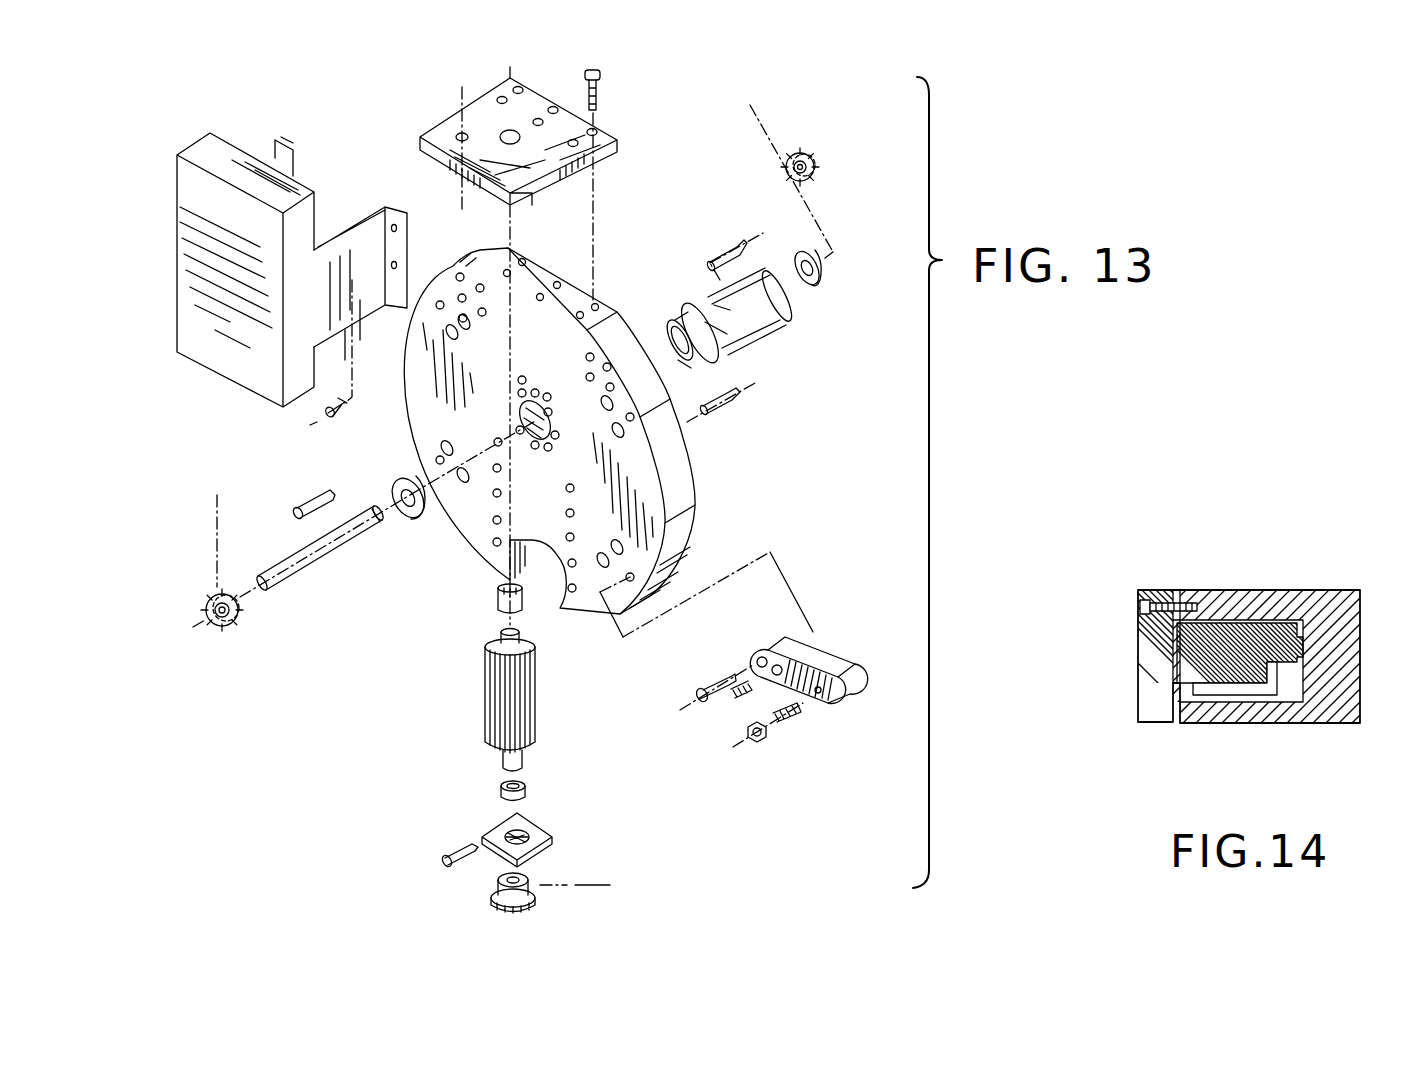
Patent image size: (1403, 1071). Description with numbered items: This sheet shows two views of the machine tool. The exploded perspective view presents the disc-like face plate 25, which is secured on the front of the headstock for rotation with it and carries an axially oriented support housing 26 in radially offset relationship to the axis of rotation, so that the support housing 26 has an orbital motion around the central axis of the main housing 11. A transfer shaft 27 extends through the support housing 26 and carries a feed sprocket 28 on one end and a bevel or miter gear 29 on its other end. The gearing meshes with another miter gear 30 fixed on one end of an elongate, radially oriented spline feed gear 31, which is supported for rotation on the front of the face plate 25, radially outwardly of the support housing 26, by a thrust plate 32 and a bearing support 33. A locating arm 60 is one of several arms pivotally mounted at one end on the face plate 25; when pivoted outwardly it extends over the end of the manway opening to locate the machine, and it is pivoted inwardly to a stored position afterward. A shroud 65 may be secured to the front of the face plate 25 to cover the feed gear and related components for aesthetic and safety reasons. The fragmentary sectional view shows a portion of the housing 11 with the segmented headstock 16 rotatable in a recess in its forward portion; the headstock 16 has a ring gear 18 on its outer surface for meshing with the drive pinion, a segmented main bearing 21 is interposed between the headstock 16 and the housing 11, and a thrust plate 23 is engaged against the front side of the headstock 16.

In FIG. 13, the shroud 65 is at (192, 212).
In FIG. 13, the thrust plate 32 is at (443, 127).
In FIG. 13, the face plate 25 is at (688, 480).
In FIG. 13, the support housing 26 is at (775, 315).
In FIG. 13, the feed sprocket 28 is at (815, 152).
In FIG. 13, the transfer shaft 27 is at (285, 567).
In FIG. 13, the miter gear 29 is at (233, 627).
In FIG. 13, the spline feed gear 31 is at (487, 720).
In FIG. 13, the bearing support 33 is at (540, 827).
In FIG. 13, the miter gear 30 is at (490, 905).
In FIG. 13, the locating arm 60 is at (837, 703).
In FIG. 14, the housing 11 is at (1340, 590).
In FIG. 14, the segmented headstock 16 is at (1150, 722).
In FIG. 14, the ring gear 18 is at (1227, 702).
In FIG. 14, the segmented main bearing 21 is at (1257, 637).
In FIG. 14, the thrust plate 23 is at (1155, 590).